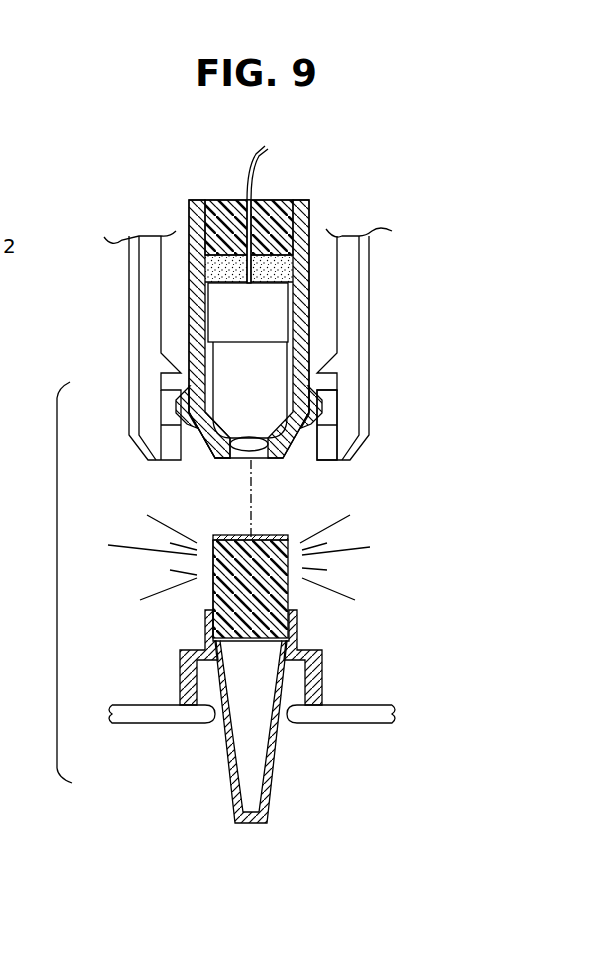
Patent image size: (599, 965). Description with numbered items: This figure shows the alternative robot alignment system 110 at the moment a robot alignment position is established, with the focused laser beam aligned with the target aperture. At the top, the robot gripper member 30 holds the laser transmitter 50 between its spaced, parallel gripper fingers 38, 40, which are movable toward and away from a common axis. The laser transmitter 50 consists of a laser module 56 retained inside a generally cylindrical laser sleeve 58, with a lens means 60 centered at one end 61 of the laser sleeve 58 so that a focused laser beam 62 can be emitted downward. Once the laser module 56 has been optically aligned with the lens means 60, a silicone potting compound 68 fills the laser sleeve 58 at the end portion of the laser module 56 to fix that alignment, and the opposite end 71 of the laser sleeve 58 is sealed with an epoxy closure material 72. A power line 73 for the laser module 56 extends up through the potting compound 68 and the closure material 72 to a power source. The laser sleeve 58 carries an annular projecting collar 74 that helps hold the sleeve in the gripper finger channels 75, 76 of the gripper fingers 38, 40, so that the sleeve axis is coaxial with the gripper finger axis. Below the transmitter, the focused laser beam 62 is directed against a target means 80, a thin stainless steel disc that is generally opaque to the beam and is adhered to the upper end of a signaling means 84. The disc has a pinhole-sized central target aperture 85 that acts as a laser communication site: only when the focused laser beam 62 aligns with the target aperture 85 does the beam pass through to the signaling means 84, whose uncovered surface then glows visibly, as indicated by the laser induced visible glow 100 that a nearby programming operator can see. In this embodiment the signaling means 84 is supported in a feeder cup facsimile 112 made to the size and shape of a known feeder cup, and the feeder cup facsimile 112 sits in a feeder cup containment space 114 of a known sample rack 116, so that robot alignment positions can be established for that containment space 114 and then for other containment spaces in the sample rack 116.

The robot gripper member 30 is at (268, 344).
The gripper finger 38 is at (128, 296).
The gripper finger 40 is at (370, 270).
The laser transmitter 50 is at (286, 330).
The laser module 56 is at (262, 318).
The laser sleeve 58 is at (285, 301).
The lens means 60 is at (270, 458).
The end of laser sleeve 61 is at (213, 458).
The focused laser beam 62 is at (253, 489).
The silicone potting compound 68 is at (203, 272).
The end of laser sleeve 71 is at (303, 199).
The closure material 72 is at (270, 200).
The power line 73 is at (243, 158).
The annular projecting collar 74 is at (337, 418).
The gripper finger channel 75 is at (175, 405).
The gripper finger channel 76 is at (333, 400).
The target means 80 is at (213, 562).
The signaling means 84 is at (208, 593).
The central target aperture 85 is at (252, 534).
The laser induced visible glow 100 is at (368, 549).
The robot alignment system 110 is at (229, 602).
The feeder cup facsimile 112 is at (325, 676).
The feeder cup containment space 114 is at (291, 728).
The sample rack 116 is at (163, 725).